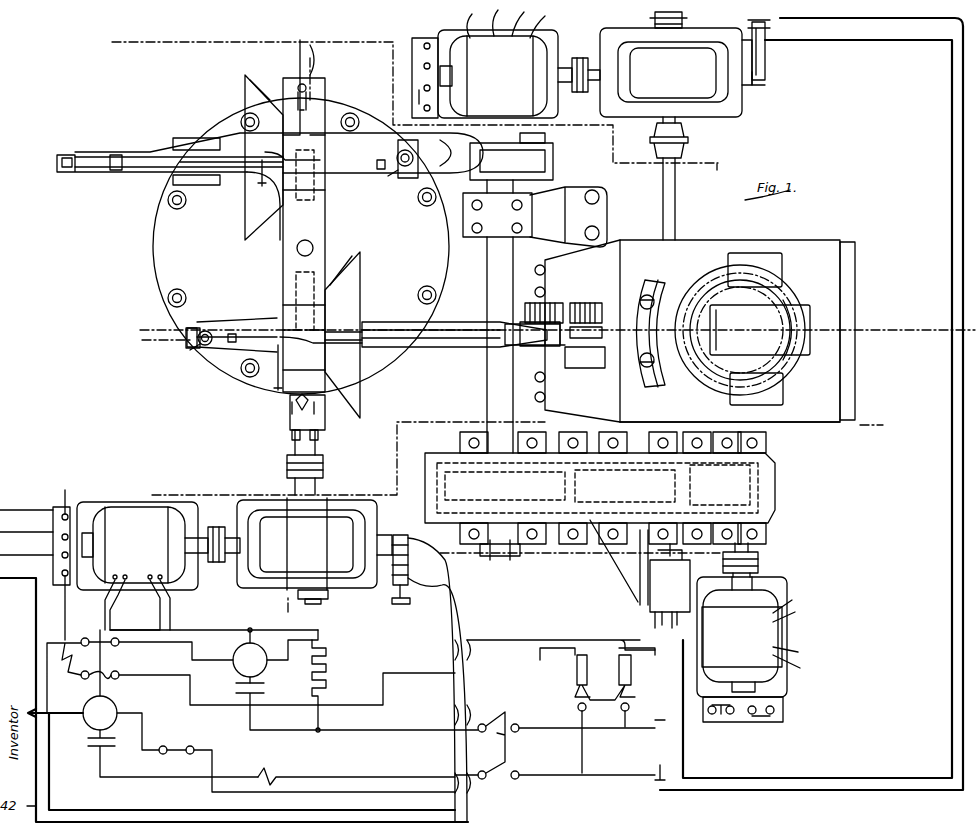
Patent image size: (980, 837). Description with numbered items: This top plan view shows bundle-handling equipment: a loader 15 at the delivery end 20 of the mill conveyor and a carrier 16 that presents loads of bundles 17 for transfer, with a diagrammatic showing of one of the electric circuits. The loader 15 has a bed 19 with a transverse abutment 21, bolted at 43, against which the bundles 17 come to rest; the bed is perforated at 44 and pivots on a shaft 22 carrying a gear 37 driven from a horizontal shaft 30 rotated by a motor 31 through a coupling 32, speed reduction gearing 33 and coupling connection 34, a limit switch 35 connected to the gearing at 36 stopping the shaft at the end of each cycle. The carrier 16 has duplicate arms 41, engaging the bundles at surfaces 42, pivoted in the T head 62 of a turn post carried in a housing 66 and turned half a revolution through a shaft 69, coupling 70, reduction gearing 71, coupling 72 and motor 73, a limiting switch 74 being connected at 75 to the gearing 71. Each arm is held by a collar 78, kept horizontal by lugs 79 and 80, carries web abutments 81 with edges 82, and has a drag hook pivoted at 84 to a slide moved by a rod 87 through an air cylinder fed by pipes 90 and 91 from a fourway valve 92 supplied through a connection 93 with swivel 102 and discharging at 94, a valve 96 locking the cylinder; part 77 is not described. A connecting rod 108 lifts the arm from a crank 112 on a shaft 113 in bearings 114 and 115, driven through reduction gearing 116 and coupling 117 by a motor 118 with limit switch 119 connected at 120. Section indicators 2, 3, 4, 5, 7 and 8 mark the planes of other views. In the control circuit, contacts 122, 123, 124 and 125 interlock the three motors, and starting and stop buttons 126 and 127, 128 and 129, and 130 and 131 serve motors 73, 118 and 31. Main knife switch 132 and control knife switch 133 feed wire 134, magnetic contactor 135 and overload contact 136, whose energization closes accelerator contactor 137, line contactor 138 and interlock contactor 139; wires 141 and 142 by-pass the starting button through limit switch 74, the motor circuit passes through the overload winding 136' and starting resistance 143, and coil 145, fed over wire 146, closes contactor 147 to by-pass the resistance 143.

The section line 2- 2 is at (887, 412).
The section line 3- 3 is at (112, 42).
The section line 4- 4 is at (877, 312).
The section line 5- 5 is at (718, 163).
The section line 7- 7 is at (556, 294).
The section line 8- 8 is at (288, 616).
The loader 15 is at (775, 428).
The carrier 16 is at (150, 172).
The bundles 17 is at (705, 272).
The bed 19 is at (845, 345).
The delivery end of the mill conveyor 20 is at (855, 244).
The transverse abutment 21 is at (652, 385).
The shaft 22 is at (585, 362).
The horizontal shaft 30 is at (677, 200).
The motor 31 is at (506, 36).
The coupling 32 is at (578, 92).
The speed reduction gearing 33 is at (676, 72).
The coupling connection 34 is at (688, 140).
The limit switch 35 is at (764, 78).
The operative connection to reduction gearing 36 is at (728, 28).
The gear 37 is at (565, 305).
The arms 41 is at (128, 152).
The engagement surfaces 42 is at (770, 328).
The bolted connection 43 is at (645, 292).
The perforation of the bed 44 is at (792, 362).
The T head 62 is at (326, 223).
The housing 66 is at (326, 244).
The shaft 69 is at (287, 420).
The coupling 70 is at (324, 466).
The reduction gearing 71 is at (314, 544).
The coupling 72 is at (220, 535).
The motor 73 is at (128, 515).
The limiting switch 74 is at (408, 560).
The operative connection to gearing 75 is at (350, 594).
The guide 77 is at (326, 190).
The collar 78 is at (315, 70).
The lug on turn post head 79 is at (326, 207).
The lug on arm 80 is at (283, 194).
The web abutments 81 is at (270, 95).
The cooperating edges 82 is at (246, 85).
The horizontal pivot 84 is at (115, 170).
The rod 87 is at (148, 160).
The pipe 90 is at (406, 148).
The pipe 91 is at (305, 160).
The fourway valve 92 is at (398, 170).
The air pressure connection 93 is at (330, 98).
The waste discharge 94 is at (405, 170).
The valve 96 is at (378, 165).
The swivel connection 102 is at (300, 88).
The connecting rod 108 is at (412, 186).
The crank 112 is at (553, 152).
The shaft 113 is at (490, 262).
The bearing 114 is at (548, 186).
The bearing 115 is at (472, 440).
The reduction gearing 116 is at (455, 490).
The coupling 117 is at (758, 556).
The motor 118 is at (785, 636).
The limit switch 119 is at (662, 612).
The operative connection to shaft 120 is at (575, 553).
The cooperating contacts 122 is at (684, 570).
The cooperating contacts 123 is at (768, 48).
The cooperating contacts 124 is at (408, 538).
The cooperating contacts 125 is at (408, 578).
The starting button 126 is at (55, 558).
The stop button 127 is at (55, 520).
The starting button 128 is at (762, 722).
The stop button 129 is at (722, 722).
The starting button 130 is at (422, 98).
The stop button 131 is at (420, 58).
The main disconnecting knife switch 132 is at (508, 748).
The control circuit knife switch 133 is at (575, 688).
The wire 134 is at (62, 620).
The magnetic contactor 135 is at (112, 696).
The normally closed contact of the overload relay 136 is at (307, 760).
The winding of the overload relay 136' is at (356, 768).
The accelerator contactor 137 is at (122, 660).
The line contactor 138 is at (88, 745).
The interlock contactor 139 is at (70, 672).
The wire 141 is at (452, 617).
The wire 142 is at (470, 610).
The starting resistance 143 is at (328, 672).
The coil of the accelerating contactor 145 is at (236, 655).
The wire 146 is at (556, 640).
The contactor 147 is at (266, 690).